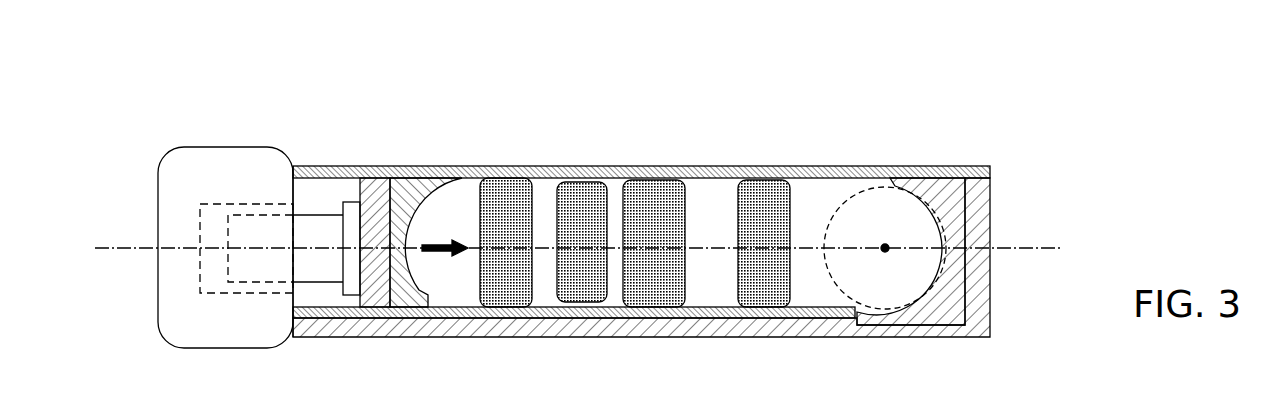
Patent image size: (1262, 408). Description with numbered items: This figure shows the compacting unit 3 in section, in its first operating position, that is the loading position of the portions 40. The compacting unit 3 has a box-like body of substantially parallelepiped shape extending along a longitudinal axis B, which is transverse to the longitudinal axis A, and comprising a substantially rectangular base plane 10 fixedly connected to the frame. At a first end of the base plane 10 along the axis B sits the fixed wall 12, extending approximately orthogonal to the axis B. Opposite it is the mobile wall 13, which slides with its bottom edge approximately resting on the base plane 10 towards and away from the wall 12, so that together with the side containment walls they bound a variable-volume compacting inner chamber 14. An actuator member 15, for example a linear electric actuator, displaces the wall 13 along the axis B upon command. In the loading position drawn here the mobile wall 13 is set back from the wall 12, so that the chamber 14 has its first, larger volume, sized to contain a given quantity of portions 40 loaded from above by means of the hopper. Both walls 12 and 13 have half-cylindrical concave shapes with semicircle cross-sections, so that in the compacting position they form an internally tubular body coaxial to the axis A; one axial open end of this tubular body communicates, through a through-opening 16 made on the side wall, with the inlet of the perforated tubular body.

The compacting unit 3 is at (681, 216).
The base plane 10 is at (797, 303).
The wall 12 is at (950, 205).
The wall 13 is at (403, 187).
The variable-volume compacting inner chamber 14 is at (912, 217).
The actuator member 15 is at (207, 160).
The through-opening 16 is at (832, 217).
The portions 40 is at (766, 194).
The longitudinal axis A is at (886, 252).
The longitudinal axis B is at (1042, 249).